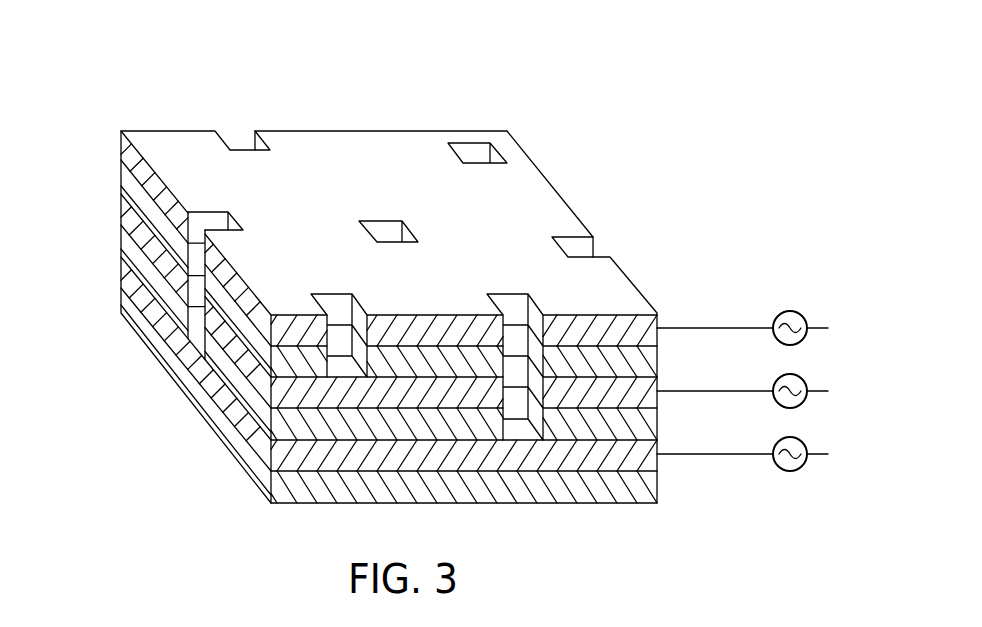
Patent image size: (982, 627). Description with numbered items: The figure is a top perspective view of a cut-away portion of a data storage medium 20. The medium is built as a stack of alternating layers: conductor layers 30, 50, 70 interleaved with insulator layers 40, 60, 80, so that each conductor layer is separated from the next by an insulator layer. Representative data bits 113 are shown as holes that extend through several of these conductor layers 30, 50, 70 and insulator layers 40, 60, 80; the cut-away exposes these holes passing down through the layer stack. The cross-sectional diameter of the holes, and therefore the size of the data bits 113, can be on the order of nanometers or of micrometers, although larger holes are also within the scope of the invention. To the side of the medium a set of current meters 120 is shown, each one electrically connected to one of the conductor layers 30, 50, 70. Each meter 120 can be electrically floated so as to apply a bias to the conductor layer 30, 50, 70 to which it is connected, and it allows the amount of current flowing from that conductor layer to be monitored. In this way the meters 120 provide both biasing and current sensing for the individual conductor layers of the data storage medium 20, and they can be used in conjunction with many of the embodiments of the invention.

The data storage medium 20 is at (518, 203).
The conductor layer 30 is at (658, 321).
The insulator layer 40 is at (658, 358).
The conductor layer 50 is at (658, 383).
The insulator layer 60 is at (658, 422).
The conductor layer 70 is at (658, 445).
The insulator layer 80 is at (658, 484).
The data bits 113 is at (205, 207).
The current meters 120 is at (789, 437).